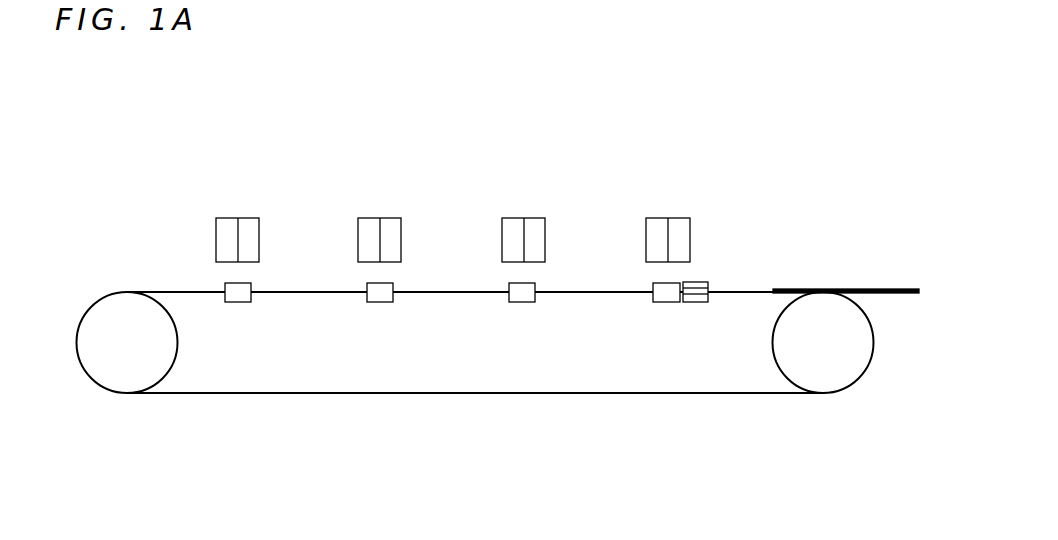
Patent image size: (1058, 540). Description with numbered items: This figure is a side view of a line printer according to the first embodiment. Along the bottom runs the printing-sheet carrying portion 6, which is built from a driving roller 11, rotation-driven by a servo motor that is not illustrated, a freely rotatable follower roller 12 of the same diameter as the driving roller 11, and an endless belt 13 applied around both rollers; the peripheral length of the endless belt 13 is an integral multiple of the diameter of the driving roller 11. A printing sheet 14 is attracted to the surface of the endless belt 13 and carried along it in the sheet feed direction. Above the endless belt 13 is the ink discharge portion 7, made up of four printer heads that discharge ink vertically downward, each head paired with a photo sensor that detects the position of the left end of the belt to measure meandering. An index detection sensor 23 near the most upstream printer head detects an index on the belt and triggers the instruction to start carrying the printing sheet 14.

The printing-sheet carrying portion 6 is at (475, 402).
The ink discharge portion 7 is at (473, 214).
The driving roller 11 is at (133, 365).
The follower roller 12 is at (818, 365).
The endless belt 13 is at (128, 458).
The printing sheet 14 is at (891, 289).
The index detection sensor 23 is at (696, 302).